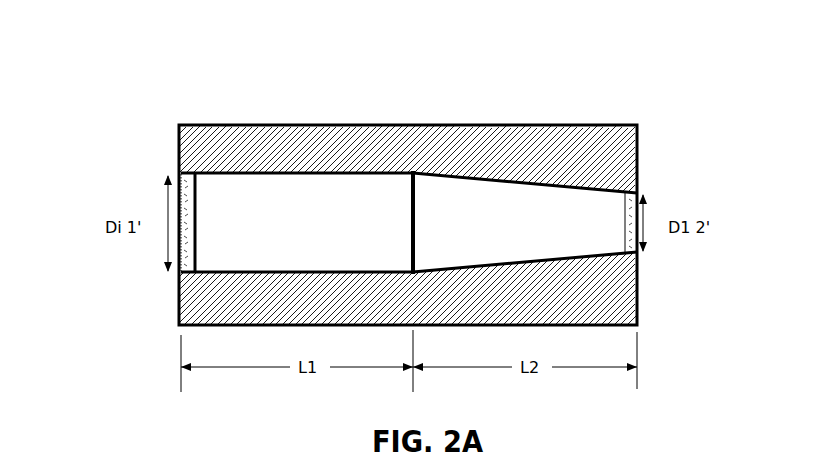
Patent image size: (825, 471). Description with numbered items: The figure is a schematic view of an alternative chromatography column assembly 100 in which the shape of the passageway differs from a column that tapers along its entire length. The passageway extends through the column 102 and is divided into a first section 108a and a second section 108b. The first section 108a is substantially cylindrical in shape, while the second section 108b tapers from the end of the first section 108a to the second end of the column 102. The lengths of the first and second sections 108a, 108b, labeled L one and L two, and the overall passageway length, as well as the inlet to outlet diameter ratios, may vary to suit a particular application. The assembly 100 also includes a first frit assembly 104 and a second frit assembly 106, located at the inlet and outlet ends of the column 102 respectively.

The chromatography column assembly 100 is at (229, 51).
The column 102 is at (420, 124).
The first frit assembly 104 is at (178, 169).
The second frit assembly 106 is at (641, 192).
The first section 108a is at (294, 205).
The second section 108b is at (573, 221).